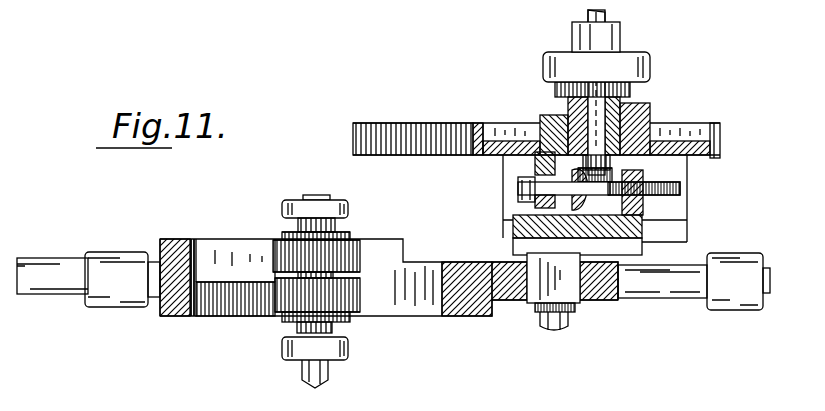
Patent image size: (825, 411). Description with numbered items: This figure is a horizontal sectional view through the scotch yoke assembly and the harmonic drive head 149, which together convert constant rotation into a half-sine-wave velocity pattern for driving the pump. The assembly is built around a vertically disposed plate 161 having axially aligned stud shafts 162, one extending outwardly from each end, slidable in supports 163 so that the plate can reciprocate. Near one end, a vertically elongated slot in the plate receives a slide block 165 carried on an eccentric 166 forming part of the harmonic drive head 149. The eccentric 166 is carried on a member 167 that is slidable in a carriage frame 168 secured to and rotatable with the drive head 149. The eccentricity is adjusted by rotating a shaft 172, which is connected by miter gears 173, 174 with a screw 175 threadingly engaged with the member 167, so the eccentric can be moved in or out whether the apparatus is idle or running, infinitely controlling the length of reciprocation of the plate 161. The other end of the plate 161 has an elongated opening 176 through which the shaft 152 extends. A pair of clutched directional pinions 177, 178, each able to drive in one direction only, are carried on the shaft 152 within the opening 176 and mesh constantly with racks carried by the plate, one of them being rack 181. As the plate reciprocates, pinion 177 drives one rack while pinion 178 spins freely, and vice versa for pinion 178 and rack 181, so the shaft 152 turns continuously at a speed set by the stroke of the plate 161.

The harmonic drive head 149 is at (734, 136).
The shaft 152 is at (330, 370).
The plate 161 is at (392, 239).
The stud shafts 162 is at (664, 291).
The supports 163 is at (737, 312).
The slide block 165 is at (540, 288).
The eccentric 166 is at (550, 329).
The member 167 is at (513, 233).
The carriage frame 168 is at (680, 217).
The shaft 172 is at (606, 17).
The miter gear 173 is at (606, 168).
The miter gear 174 is at (570, 192).
The screw 175 is at (682, 189).
The elongated opening 176 is at (193, 252).
The clutched directional pinion 177 is at (275, 250).
The clutched directional pinion 178 is at (358, 298).
The rack 181 is at (237, 303).